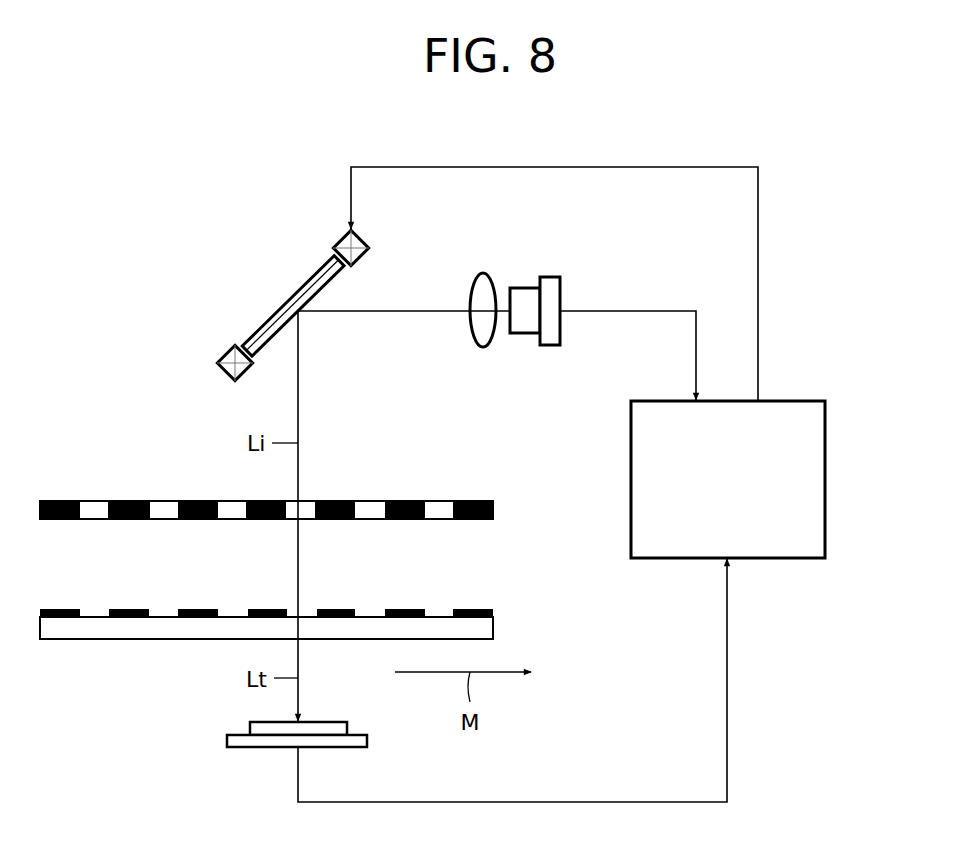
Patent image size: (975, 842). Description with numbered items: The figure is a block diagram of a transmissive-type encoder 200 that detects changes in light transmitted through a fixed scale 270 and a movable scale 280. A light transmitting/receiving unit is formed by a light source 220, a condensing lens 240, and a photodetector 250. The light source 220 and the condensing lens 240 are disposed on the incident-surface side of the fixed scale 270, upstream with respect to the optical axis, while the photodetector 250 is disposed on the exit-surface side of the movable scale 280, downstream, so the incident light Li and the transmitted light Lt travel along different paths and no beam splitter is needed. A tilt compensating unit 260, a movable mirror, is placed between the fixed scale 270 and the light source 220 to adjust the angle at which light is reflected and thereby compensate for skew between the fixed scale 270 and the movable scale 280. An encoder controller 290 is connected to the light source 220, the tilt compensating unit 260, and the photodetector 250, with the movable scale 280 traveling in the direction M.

The encoder 200 is at (870, 172).
The light source 220 is at (554, 276).
The condensing lens 240 is at (482, 272).
The photodetector 250 is at (227, 741).
The tilt compensating unit 260 is at (288, 300).
The fixed scale 270 is at (494, 510).
The movable scale 280 is at (494, 630).
The encoder controller 290 is at (796, 400).